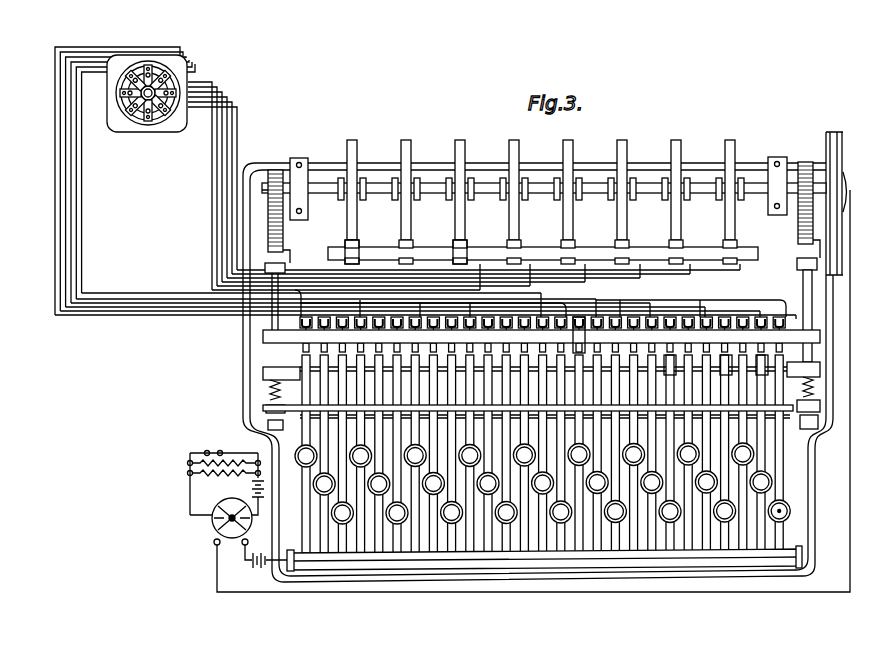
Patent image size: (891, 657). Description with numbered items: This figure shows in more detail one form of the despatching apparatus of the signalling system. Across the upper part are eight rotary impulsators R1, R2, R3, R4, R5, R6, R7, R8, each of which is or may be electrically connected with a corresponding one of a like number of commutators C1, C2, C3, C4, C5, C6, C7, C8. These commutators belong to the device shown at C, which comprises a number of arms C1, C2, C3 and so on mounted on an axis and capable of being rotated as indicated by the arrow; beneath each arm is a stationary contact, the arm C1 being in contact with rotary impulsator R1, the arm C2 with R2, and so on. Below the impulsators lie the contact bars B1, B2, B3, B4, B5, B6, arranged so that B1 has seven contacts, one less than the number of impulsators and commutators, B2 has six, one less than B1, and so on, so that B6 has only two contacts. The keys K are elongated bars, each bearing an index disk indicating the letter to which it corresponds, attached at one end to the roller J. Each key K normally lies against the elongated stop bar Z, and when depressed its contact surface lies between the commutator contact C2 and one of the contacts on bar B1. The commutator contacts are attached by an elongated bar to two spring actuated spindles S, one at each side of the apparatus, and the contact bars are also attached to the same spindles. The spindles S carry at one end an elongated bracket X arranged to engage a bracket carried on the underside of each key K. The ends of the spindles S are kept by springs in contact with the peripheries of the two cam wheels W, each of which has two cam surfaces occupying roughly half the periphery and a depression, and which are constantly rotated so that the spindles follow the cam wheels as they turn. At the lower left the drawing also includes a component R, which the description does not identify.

The commutator C is at (148, 61).
The commutator arm C1 is at (147, 114).
The commutator arm C2 is at (133, 112).
The commutator arm C3 is at (125, 100).
The commutator arm C4 is at (122, 88).
The commutator arm C5 is at (160, 70).
The commutator arm C6 is at (168, 84).
The commutator arm C7 is at (172, 94).
The commutator arm C8 is at (163, 112).
The cam wheel W is at (270, 222).
The rotary impulsator R1 is at (352, 193).
The rotary impulsator R2 is at (406, 193).
The rotary impulsator R3 is at (460, 193).
The rotary impulsator R4 is at (514, 193).
The rotary impulsator R5 is at (568, 193).
The rotary impulsator R6 is at (622, 193).
The rotary impulsator R7 is at (676, 193).
The rotary impulsator R8 is at (730, 193).
The contact bar B1 is at (373, 280).
The contact bar B2 is at (480, 280).
The contact bar B3 is at (585, 356).
The contact bar B4 is at (675, 368).
The contact bar B5 is at (728, 368).
The contact bar B6 is at (765, 370).
The spring actuated spindle S is at (262, 347).
The elongated stop bar Z is at (810, 398).
The elongated bracket X is at (812, 420).
The key K is at (310, 505).
The roller J is at (347, 558).
The relay R is at (217, 522).